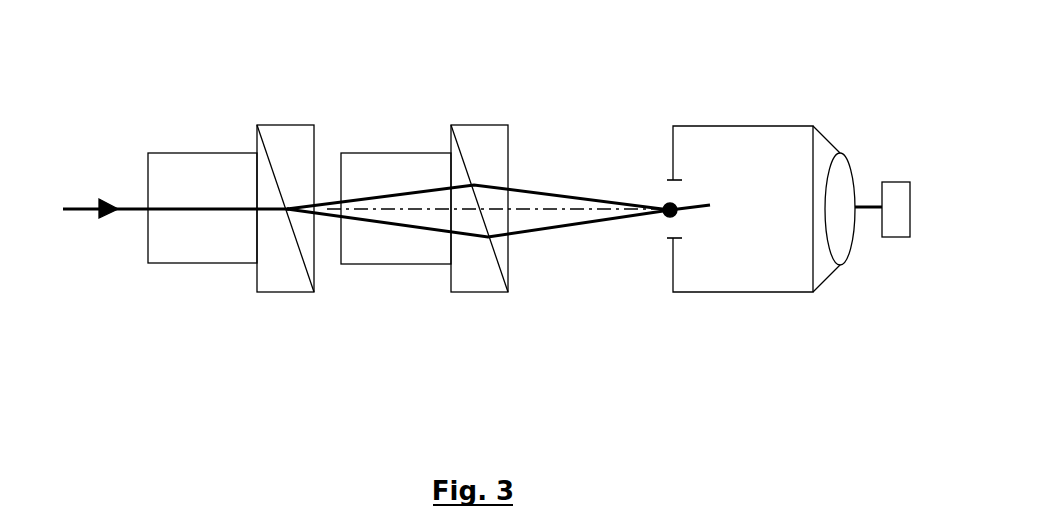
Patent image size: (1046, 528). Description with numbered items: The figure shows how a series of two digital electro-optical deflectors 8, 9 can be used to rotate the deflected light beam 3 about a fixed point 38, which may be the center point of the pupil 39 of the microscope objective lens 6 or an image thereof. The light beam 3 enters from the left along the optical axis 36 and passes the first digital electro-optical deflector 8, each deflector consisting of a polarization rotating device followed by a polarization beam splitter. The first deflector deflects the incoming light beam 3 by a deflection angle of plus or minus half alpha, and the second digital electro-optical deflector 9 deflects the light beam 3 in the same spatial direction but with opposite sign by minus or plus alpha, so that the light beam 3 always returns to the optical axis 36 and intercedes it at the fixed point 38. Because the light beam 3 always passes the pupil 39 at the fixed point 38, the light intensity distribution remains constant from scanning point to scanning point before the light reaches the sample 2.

The sample 2 is at (898, 167).
The light beam 3 is at (84, 207).
The microscope objective lens 6 is at (788, 115).
The digital electro-optical deflector 8 is at (230, 240).
The digital electro-optical deflector 9 is at (424, 239).
The optical axis 36 is at (558, 207).
The fixed point 38 is at (675, 205).
The pupil 39 is at (661, 184).